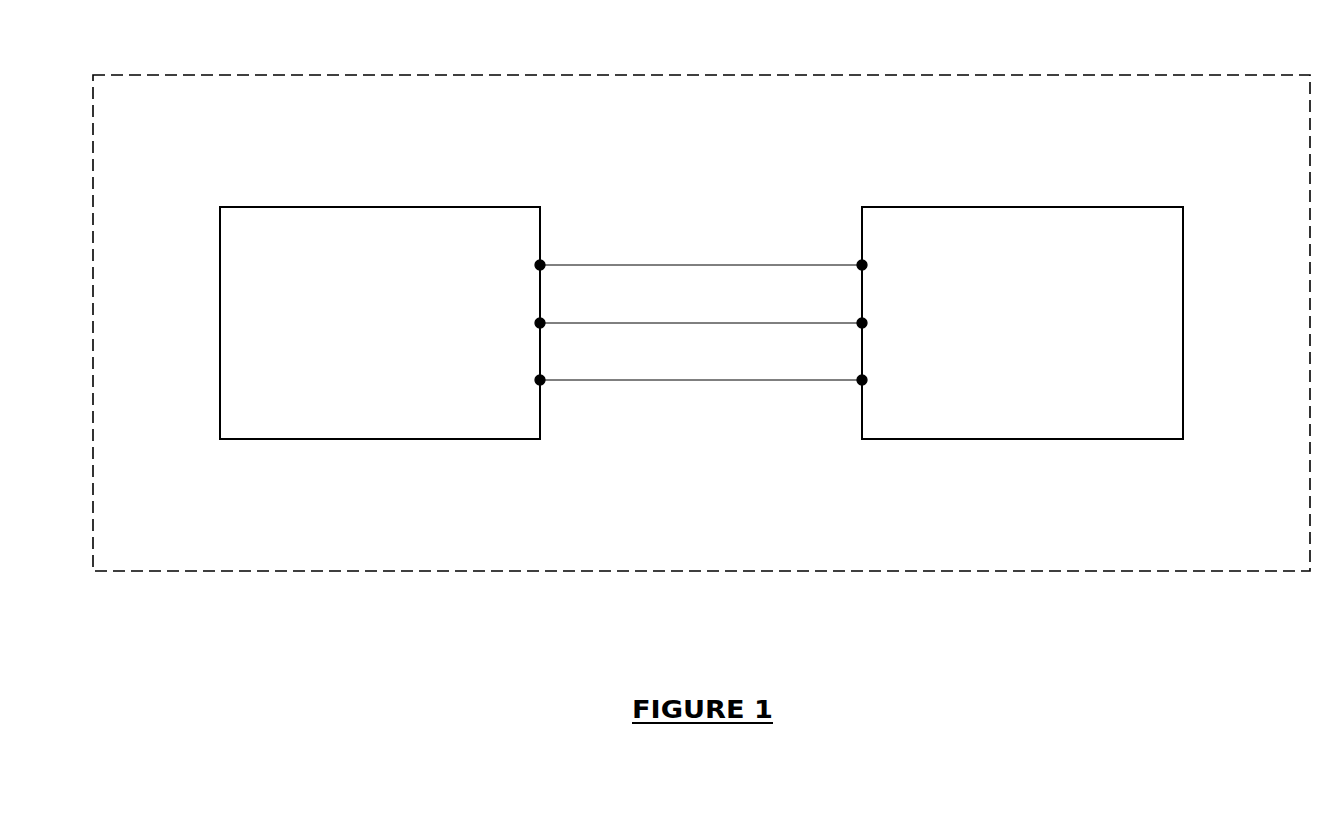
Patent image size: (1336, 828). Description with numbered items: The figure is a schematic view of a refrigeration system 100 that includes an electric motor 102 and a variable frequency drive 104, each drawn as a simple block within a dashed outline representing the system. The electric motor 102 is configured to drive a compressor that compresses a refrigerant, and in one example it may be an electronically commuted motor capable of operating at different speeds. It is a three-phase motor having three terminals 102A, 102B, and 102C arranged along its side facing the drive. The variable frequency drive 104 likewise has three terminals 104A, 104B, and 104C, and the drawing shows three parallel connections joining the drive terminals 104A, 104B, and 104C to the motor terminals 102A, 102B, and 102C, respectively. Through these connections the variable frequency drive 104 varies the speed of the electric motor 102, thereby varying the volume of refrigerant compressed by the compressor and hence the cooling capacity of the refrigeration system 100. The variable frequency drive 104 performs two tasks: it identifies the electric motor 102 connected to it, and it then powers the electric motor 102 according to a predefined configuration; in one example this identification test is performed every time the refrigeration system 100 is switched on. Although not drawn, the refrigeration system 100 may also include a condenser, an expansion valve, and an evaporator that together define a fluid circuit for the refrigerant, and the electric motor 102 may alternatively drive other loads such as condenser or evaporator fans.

The refrigeration system 100 is at (198, 40).
The electric motor 102 is at (393, 207).
The variable frequency drive 104 is at (1022, 207).
The terminal 102A is at (540, 265).
The terminal 102B is at (540, 323).
The terminal 102C is at (540, 380).
The terminal 104A is at (862, 265).
The terminal 104B is at (862, 323).
The terminal 104C is at (862, 380).